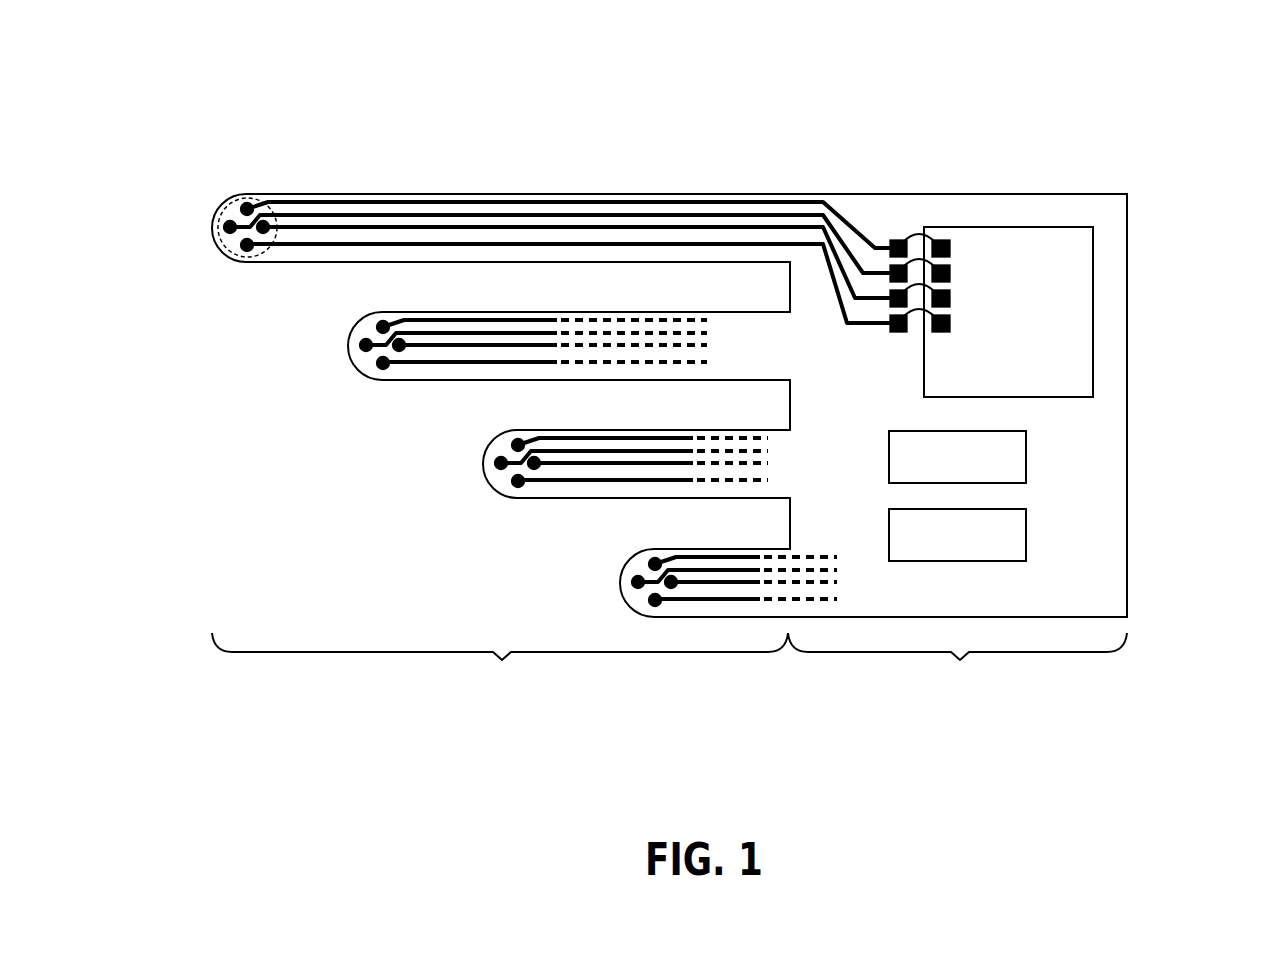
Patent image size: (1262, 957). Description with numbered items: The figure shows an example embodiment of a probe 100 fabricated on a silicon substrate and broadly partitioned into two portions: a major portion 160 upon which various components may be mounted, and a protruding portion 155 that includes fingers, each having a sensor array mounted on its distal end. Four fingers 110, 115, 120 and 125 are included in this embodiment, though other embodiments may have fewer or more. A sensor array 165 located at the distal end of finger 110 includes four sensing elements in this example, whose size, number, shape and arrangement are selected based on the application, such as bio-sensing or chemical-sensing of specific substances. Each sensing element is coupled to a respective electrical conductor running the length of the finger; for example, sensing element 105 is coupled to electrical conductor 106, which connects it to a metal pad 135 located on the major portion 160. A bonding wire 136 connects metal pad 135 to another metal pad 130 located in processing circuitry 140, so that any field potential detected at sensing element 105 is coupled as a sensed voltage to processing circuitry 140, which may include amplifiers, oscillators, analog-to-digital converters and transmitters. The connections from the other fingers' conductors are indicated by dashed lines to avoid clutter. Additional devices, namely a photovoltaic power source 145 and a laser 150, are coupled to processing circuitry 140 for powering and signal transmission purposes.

The probe 100 is at (1208, 110).
The sensing element 105 is at (248, 252).
The electrical conductor 106 is at (662, 246).
The finger 110 is at (432, 193).
The finger 115 is at (482, 313).
The finger 120 is at (618, 431).
The finger 125 is at (690, 549).
The bonding pad 130 is at (900, 335).
The metal pad 135 is at (892, 240).
The bonding wire 136 is at (907, 238).
The processing circuitry 140 is at (1086, 256).
The photovoltaic power source 145 is at (1026, 457).
The laser 150 is at (1026, 535).
The protruding portion 155 is at (500, 672).
The major portion 160 is at (957, 672).
The sensor array 165 is at (252, 202).